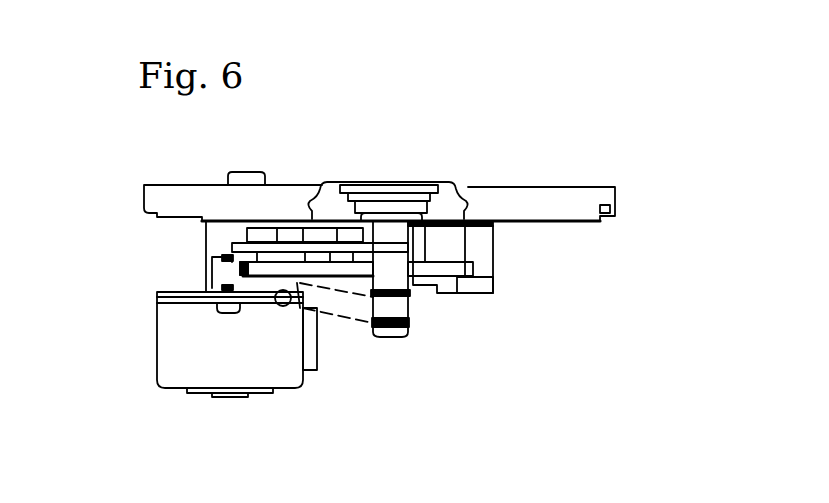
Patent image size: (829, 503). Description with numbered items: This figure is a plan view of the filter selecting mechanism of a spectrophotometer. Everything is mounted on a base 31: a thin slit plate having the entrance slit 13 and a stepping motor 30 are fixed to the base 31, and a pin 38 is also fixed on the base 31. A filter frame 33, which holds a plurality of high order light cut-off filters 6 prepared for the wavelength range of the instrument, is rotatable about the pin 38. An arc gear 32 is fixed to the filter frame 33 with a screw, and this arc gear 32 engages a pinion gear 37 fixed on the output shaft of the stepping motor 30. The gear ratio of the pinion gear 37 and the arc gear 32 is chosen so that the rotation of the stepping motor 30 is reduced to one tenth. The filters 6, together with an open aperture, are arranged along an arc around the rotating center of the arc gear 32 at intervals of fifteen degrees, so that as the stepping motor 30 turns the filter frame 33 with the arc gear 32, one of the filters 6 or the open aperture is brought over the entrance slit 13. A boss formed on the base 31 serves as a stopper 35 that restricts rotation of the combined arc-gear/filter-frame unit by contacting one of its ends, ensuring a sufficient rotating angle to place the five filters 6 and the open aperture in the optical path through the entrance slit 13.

The high order light cut-off filter 6 is at (262, 220).
The entrance slit 13 is at (411, 199).
The stepping motor 30 is at (158, 396).
The base 31 is at (616, 186).
The arc gear 32 is at (484, 266).
The filter frame 33 is at (220, 253).
The stopper 35 is at (490, 305).
The pinion gear 37 is at (199, 288).
The pin 38 is at (375, 345).